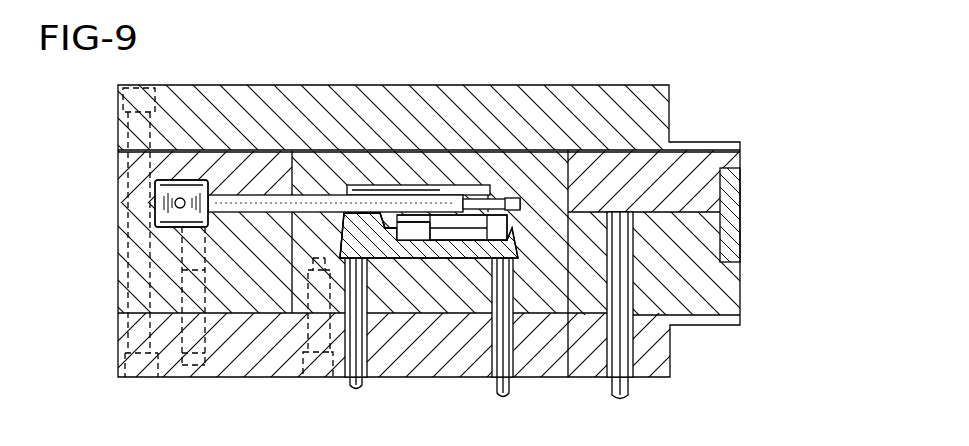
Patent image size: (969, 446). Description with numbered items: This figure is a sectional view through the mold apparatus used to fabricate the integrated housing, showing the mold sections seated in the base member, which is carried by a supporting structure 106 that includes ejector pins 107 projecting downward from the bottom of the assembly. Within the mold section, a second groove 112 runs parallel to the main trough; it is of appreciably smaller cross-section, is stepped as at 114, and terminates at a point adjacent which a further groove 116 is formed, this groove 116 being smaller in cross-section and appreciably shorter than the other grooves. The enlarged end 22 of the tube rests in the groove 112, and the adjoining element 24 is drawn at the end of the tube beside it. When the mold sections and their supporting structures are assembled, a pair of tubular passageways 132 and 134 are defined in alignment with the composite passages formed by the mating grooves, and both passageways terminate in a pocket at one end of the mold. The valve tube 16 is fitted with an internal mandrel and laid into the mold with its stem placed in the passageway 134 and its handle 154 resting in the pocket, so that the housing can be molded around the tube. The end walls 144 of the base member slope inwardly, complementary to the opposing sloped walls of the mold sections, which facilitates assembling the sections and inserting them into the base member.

The supporting structure 106 is at (97, 266).
The ejector pins 107 is at (356, 385).
The second groove 112 is at (458, 236).
The step 114 is at (389, 259).
The groove 116 is at (345, 225).
The tubular passageway 132 is at (192, 182).
The tubular passageway 134 is at (245, 192).
The end walls 144 is at (512, 228).
The handle 154 is at (156, 201).
The valve tube 16 is at (390, 186).
The enlarged end of tube 22 is at (415, 222).
The pin 24 is at (502, 205).